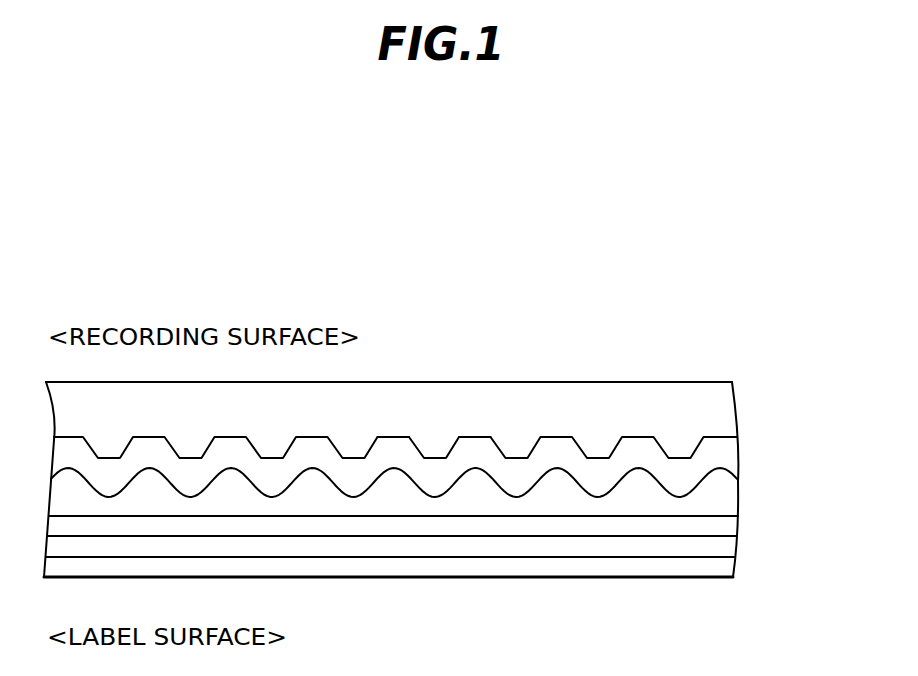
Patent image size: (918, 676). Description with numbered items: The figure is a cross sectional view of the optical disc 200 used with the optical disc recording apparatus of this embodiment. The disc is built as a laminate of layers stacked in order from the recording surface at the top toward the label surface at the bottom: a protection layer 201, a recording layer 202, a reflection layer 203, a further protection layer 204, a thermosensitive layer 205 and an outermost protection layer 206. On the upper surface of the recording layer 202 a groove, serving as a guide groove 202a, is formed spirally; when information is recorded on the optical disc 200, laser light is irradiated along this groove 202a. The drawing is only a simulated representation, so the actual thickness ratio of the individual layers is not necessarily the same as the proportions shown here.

The optical disc 200 is at (580, 344).
The protection layer 201 is at (727, 409).
The recording layer 202 is at (727, 452).
The groove 202a is at (478, 436).
The reflection layer 203 is at (728, 491).
The protection layer 204 is at (728, 525).
The thermosensitive layer 205 is at (728, 552).
The protection layer 206 is at (727, 569).